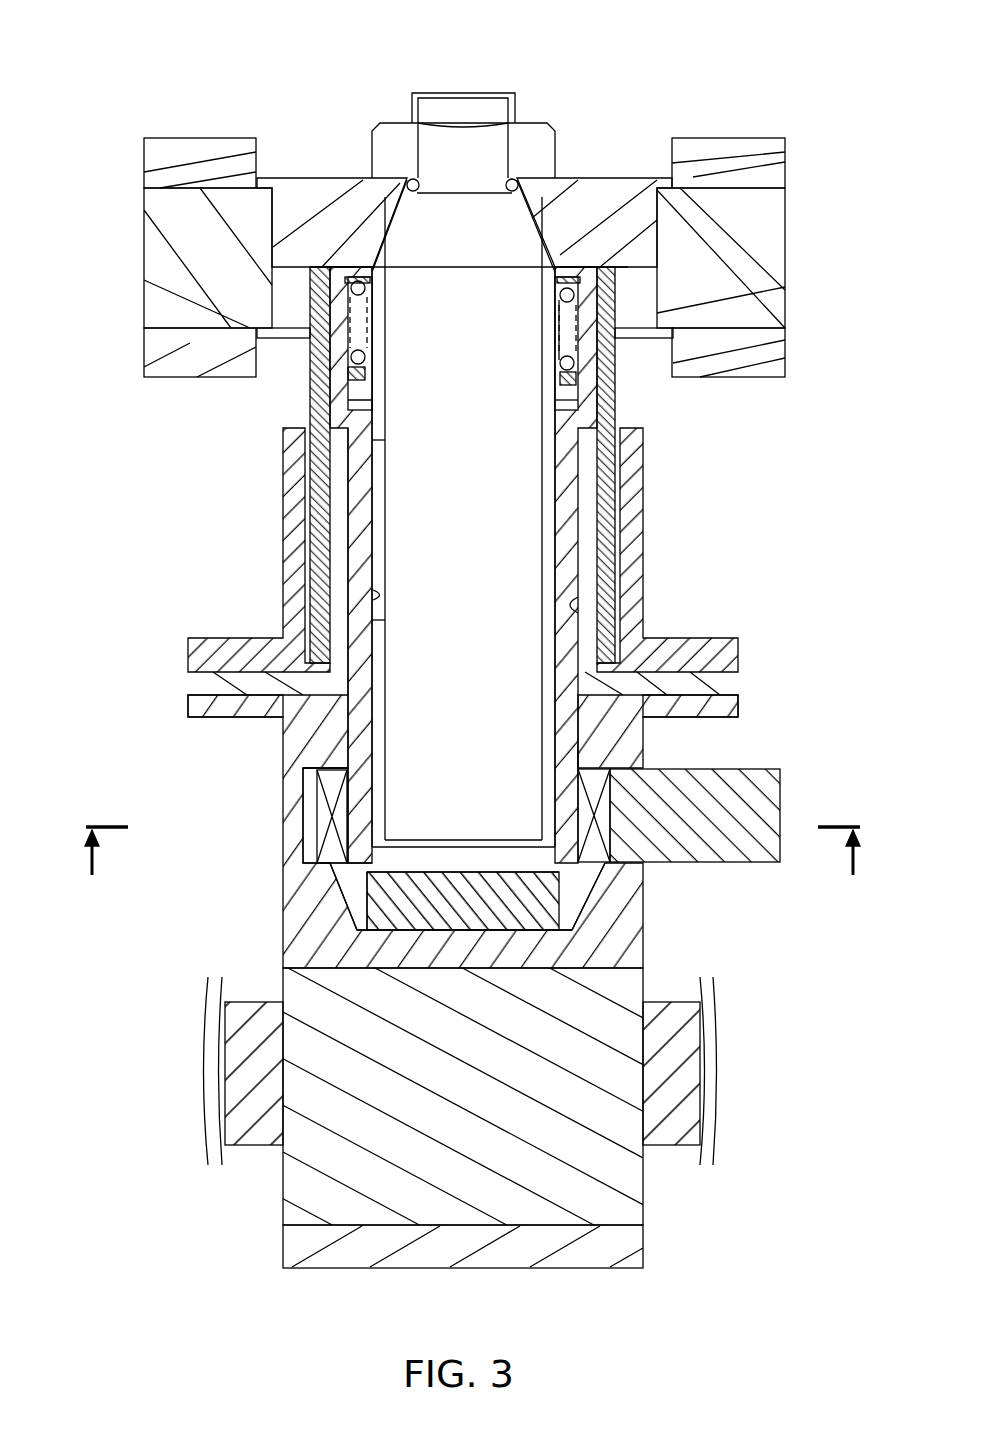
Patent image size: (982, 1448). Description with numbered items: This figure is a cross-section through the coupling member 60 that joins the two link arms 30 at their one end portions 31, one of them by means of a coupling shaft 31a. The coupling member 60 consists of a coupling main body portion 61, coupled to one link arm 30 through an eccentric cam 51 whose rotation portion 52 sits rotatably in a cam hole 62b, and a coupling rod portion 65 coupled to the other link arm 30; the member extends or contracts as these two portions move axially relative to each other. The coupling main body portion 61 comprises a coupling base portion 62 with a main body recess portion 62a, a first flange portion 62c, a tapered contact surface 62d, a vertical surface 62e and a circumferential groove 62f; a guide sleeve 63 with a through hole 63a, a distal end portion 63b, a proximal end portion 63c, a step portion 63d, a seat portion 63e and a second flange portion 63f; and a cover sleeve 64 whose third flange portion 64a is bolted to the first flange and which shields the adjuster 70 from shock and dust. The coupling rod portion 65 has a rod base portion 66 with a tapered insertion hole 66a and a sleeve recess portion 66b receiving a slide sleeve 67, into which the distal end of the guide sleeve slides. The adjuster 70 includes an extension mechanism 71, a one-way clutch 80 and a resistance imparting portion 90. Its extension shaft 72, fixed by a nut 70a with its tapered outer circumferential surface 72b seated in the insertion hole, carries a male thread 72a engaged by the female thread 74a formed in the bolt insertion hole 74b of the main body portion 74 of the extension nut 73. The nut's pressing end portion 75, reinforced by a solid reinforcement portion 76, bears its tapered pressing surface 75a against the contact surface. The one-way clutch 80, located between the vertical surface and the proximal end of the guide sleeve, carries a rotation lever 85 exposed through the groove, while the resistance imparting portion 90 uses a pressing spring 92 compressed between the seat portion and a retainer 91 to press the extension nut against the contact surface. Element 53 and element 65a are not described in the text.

The link arm 30 is at (430, 218).
The one end portion 31 is at (186, 150).
The coupling shaft 31a is at (227, 227).
The eccentric cam 51 is at (406, 1145).
The rotation portion 52 is at (548, 1203).
The base side portion 53 is at (262, 1110).
The coupling member 60 is at (467, 673).
The coupling main body portion 61 is at (467, 802).
The coupling base portion 62 is at (469, 1016).
The main body recess portion 62a is at (305, 752).
The cam hole 62b is at (400, 1227).
The first flange portion 62c is at (200, 702).
The contact surface 62d is at (565, 910).
The vertical surface 62e is at (318, 850).
The circumferential groove 62f is at (612, 852).
The guide sleeve 63 is at (740, 683).
The through hole 63a is at (575, 612).
The distal end portion 63b is at (570, 312).
The proximal end portion 63c is at (613, 752).
The step portion 63d is at (575, 385).
The seat portion 63e is at (587, 296).
The second flange portion 63f is at (200, 674).
The cover sleeve 64 is at (740, 658).
The third flange portion 64a is at (200, 655).
The coupling rod portion 65 is at (615, 177).
The tube step 65a is at (593, 398).
The rod base portion 66 is at (303, 197).
The insertion hole 66a is at (517, 205).
The sleeve recess portion 66b is at (318, 297).
The slide sleeve 67 is at (330, 406).
The adjuster 70 is at (298, 788).
The nut 70a is at (388, 132).
The extension mechanism 71 is at (336, 505).
The extension shaft 72 is at (413, 447).
The male thread 72a is at (380, 590).
The outer circumferential surface 72b is at (545, 236).
The extension nut 73 is at (346, 735).
The main body portion 74 is at (342, 524).
The female thread 74a is at (378, 466).
The bolt insertion hole 74b is at (372, 603).
The pressing end portion 75 is at (350, 868).
The pressing surface 75a is at (362, 880).
The reinforcement portion 76 is at (533, 885).
The one-way clutch 80 is at (317, 827).
The rotation lever 85 is at (765, 787).
The resistance imparting portion 90 is at (590, 348).
The retainer 91 is at (360, 376).
The pressing spring 92 is at (352, 350).